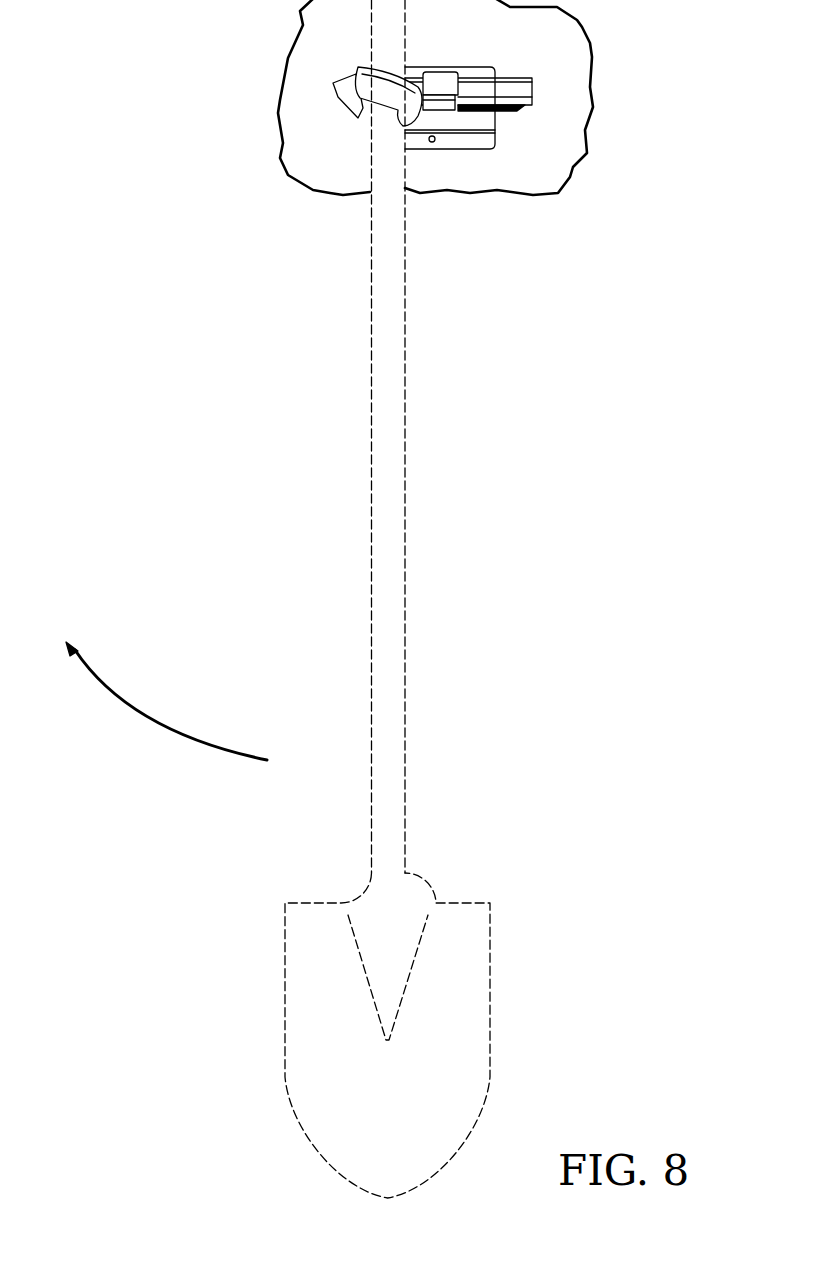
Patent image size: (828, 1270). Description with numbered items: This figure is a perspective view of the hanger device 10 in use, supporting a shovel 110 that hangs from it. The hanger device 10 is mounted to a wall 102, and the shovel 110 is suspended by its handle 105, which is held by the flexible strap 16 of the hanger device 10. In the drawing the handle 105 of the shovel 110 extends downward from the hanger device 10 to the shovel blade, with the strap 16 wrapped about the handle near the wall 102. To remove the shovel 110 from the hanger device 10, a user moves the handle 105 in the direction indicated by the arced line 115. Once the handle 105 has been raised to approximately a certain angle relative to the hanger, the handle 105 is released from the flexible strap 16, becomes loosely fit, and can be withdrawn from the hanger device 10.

The hanger device 10 is at (477, 53).
The flexible strap 16 is at (372, 82).
The wall 102 is at (572, 150).
The handle 105 is at (390, 418).
The shovel 110 is at (387, 599).
The arced line 115 is at (152, 718).